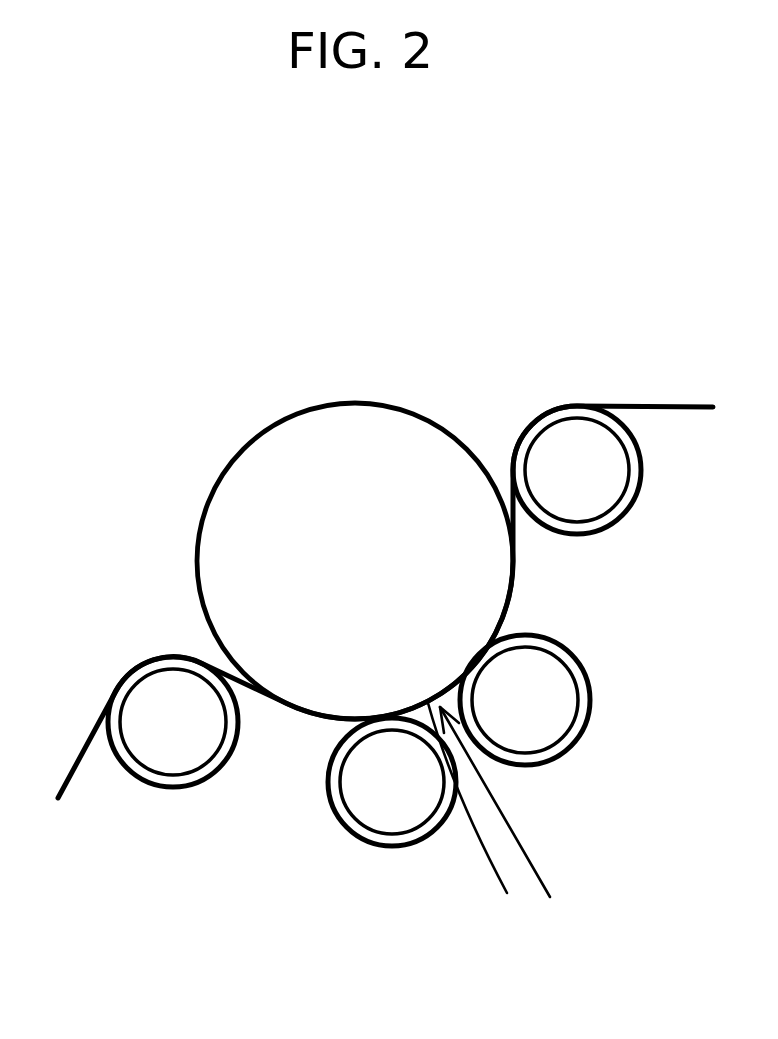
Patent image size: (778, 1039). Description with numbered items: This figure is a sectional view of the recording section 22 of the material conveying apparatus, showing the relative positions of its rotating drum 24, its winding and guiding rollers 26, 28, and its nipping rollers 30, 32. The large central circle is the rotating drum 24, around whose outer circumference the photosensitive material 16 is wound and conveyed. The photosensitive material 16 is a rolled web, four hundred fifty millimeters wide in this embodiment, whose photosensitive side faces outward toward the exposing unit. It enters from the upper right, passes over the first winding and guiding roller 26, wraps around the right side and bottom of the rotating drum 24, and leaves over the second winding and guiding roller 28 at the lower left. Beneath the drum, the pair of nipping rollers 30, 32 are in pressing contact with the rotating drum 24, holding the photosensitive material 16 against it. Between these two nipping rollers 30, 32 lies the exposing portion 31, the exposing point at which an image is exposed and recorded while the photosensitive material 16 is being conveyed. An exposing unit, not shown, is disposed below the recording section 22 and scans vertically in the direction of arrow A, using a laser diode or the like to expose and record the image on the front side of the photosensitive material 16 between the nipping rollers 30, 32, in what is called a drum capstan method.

The photosensitive material 16 is at (645, 405).
The recording section 22 is at (310, 513).
The rotating drum 24 is at (200, 533).
The winding and guiding roller 26 is at (637, 492).
The winding and guiding roller 28 is at (163, 787).
The nipping roller 30 is at (587, 717).
The exposing portion 31 is at (475, 820).
The nipping roller 32 is at (403, 845).
The arrow A is at (520, 843).